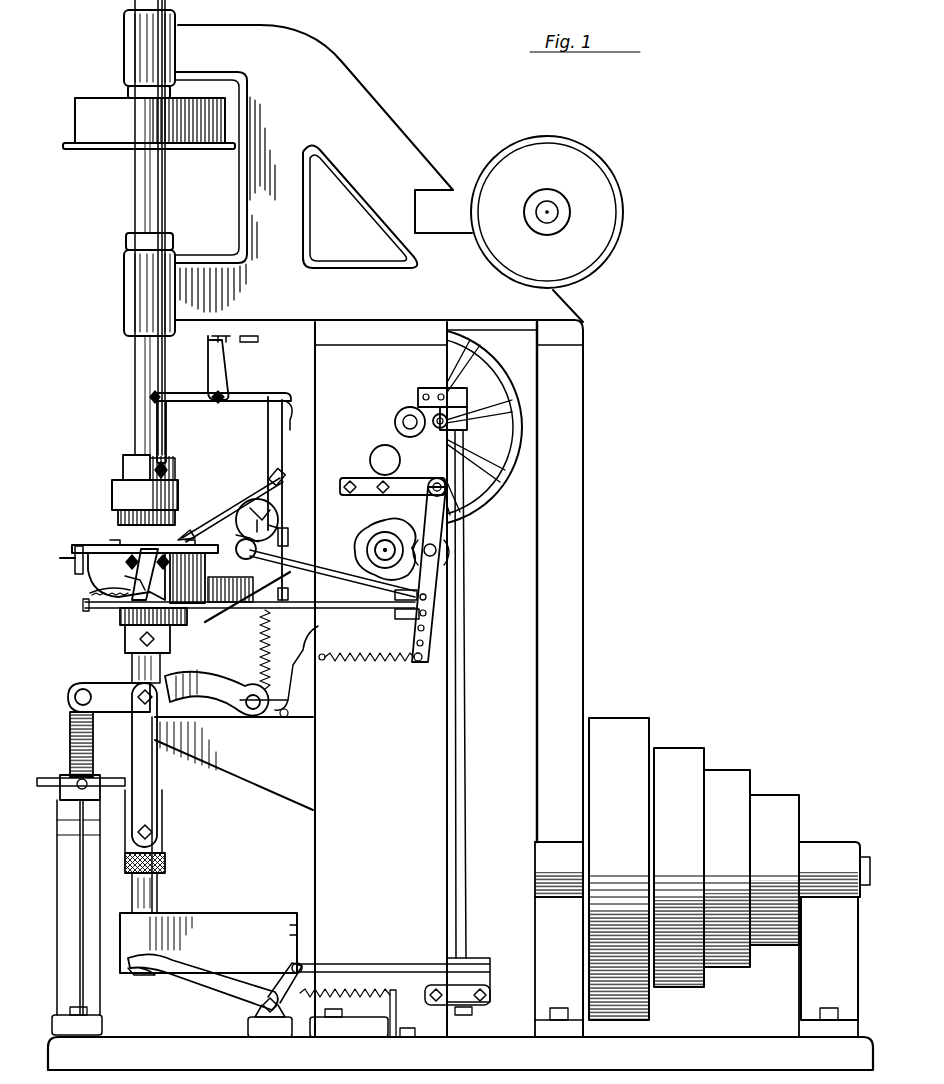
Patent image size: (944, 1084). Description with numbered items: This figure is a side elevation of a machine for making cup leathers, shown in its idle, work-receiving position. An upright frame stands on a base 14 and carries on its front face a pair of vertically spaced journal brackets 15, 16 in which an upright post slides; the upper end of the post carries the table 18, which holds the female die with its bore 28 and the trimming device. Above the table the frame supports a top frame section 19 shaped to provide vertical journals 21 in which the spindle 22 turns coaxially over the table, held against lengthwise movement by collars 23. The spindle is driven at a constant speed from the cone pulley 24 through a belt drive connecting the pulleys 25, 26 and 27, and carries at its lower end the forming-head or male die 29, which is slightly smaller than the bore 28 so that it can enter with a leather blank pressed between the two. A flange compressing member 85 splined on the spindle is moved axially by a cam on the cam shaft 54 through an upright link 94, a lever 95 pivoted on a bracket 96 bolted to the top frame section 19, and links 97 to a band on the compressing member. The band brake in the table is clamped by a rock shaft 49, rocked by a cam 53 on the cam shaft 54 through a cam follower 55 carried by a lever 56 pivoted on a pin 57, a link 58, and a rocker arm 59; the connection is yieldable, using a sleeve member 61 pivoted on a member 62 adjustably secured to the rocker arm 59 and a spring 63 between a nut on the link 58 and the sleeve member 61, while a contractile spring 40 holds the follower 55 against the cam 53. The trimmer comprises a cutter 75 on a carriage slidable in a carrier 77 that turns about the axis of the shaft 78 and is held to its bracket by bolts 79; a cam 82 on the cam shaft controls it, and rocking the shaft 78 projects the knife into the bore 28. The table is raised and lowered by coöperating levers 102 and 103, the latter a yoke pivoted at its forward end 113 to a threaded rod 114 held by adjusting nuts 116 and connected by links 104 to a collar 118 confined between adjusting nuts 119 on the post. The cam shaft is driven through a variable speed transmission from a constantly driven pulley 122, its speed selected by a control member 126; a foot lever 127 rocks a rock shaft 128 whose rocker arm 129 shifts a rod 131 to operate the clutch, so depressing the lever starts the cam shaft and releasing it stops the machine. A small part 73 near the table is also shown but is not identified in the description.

The base 14 is at (460, 1053).
The journal bracket 15 is at (48, 905).
The journal bracket 16 is at (208, 943).
The table 18 is at (84, 582).
The top frame section 19 is at (379, 531).
The vertical journals 21 is at (124, 40).
The spindle 22 is at (135, 362).
The collars 23 is at (124, 245).
The cone pulley 24 is at (744, 772).
The pulley 25 is at (622, 714).
The pulley 26 is at (603, 176).
The pulley 27 is at (75, 122).
The bore 28 is at (128, 92).
The forming-head or male die 29 is at (118, 514).
The contractile spring 40 is at (386, 662).
The rock shaft 49 is at (145, 564).
The cam 53 is at (366, 542).
The cam shaft 54 is at (387, 548).
The cam follower 55 is at (447, 553).
The lever 56 is at (432, 603).
The pin 57 is at (447, 490).
The link 58 is at (258, 620).
The rocker arm 59 is at (128, 578).
The sleeve member 61 is at (90, 595).
The member 62 is at (130, 622).
The spring 63 is at (90, 612).
The stop 73 is at (64, 556).
The cutter 75 is at (185, 537).
The carrier 77 is at (235, 510).
The shaft 78 is at (276, 520).
The bolts 79 is at (245, 607).
The cam 82 is at (352, 556).
The flange compressing member 85 is at (125, 472).
The upright link 94 is at (268, 440).
The lever 95 is at (256, 393).
The bracket 96 is at (208, 368).
The links 97 is at (167, 430).
The lever 102 is at (302, 690).
The lever 103 is at (200, 682).
The links 104 is at (155, 788).
The forward end 113 is at (83, 688).
The threaded rod 114 is at (72, 748).
The adjusting nuts 116 is at (62, 792).
The collar 118 is at (160, 830).
The adjusting nuts 119 is at (166, 862).
The pulley 122 is at (505, 372).
The control member 126 is at (373, 458).
The foot lever 127 is at (195, 980).
The rock shaft 128 is at (455, 870).
The rocker arm 129 is at (418, 398).
The rod 131 is at (436, 428).